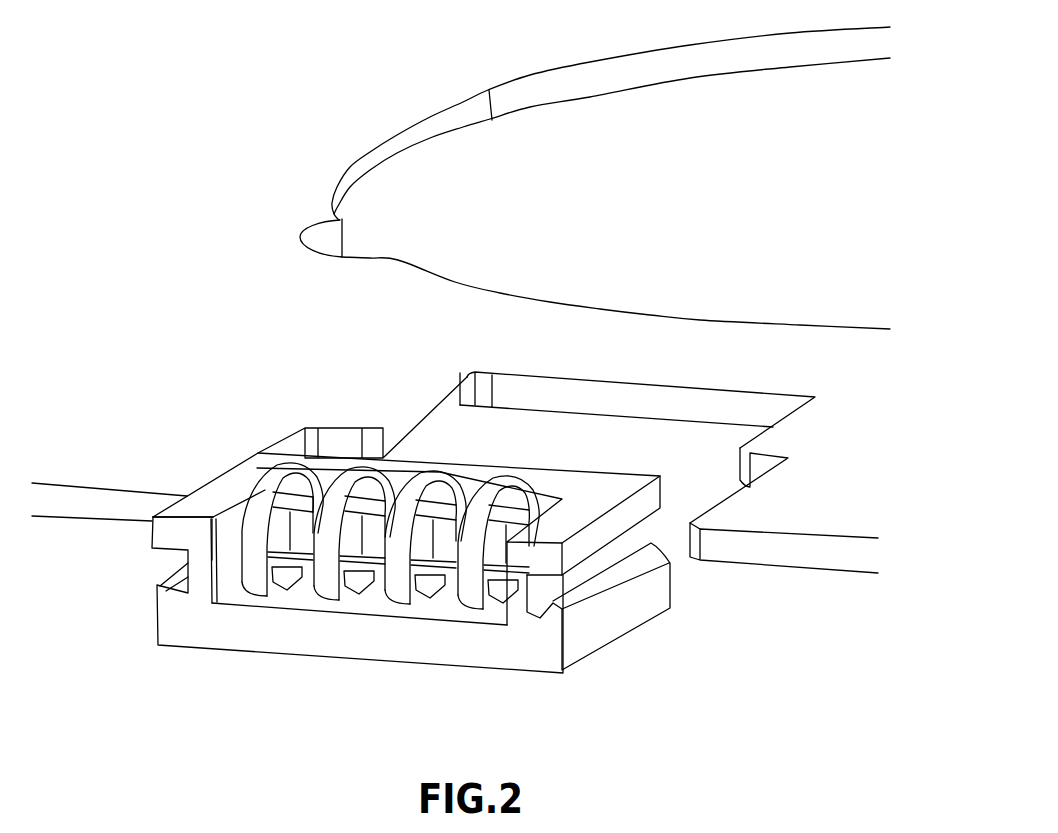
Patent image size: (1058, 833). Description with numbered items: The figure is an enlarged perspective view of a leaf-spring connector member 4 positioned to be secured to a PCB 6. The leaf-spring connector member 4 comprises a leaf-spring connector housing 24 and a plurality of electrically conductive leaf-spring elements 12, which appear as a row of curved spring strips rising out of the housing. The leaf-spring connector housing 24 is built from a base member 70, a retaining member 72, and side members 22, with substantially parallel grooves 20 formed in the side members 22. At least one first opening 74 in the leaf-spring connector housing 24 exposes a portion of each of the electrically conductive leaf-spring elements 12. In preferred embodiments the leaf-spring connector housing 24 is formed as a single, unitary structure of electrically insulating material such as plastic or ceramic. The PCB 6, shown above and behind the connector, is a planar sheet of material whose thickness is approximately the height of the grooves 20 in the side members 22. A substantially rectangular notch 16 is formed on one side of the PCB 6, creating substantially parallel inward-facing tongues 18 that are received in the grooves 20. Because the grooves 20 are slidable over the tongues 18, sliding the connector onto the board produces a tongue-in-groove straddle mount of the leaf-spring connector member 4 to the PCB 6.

The leaf-spring connector member 4 is at (261, 663).
The PCB 6 is at (240, 301).
The electrically conductive leaf-spring elements 12 is at (273, 480).
The substantially rectangular notch 16 is at (563, 425).
The inward-facing tongues 18 is at (436, 417).
The grooves 20 is at (535, 592).
The side members 22 is at (613, 629).
The leaf-spring connector housing 24 is at (192, 492).
The base member 70 is at (380, 640).
The retaining member 72 is at (335, 468).
The first opening 74 is at (225, 517).